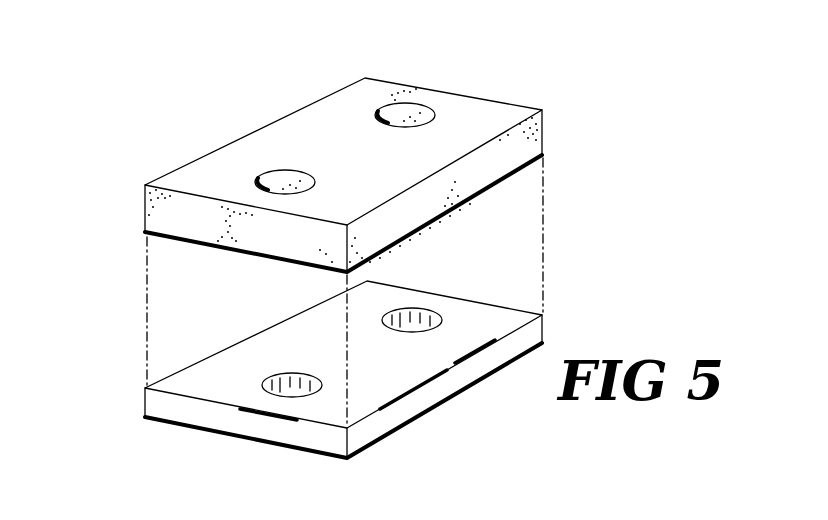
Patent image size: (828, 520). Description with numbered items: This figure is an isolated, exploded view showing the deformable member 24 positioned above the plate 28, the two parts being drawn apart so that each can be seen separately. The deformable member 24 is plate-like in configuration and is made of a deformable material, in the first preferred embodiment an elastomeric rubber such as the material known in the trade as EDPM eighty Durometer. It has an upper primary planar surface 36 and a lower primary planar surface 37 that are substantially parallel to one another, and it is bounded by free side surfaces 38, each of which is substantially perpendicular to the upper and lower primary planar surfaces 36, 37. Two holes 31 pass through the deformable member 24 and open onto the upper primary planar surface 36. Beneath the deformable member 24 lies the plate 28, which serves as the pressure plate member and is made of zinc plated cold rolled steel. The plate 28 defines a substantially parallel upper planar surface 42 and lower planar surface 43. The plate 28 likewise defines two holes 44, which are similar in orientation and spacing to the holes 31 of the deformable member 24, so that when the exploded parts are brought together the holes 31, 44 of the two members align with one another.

The deformable member 24 is at (134, 112).
The plate 28 is at (131, 356).
The holes 31 is at (277, 180).
The upper primary planar surface 36 is at (505, 108).
The lower primary planar surface 37 is at (473, 183).
The free side surfaces 38 is at (310, 134).
The upper planar surface 42 is at (510, 318).
The lower planar surface 43 is at (450, 387).
The holes 44 is at (290, 378).